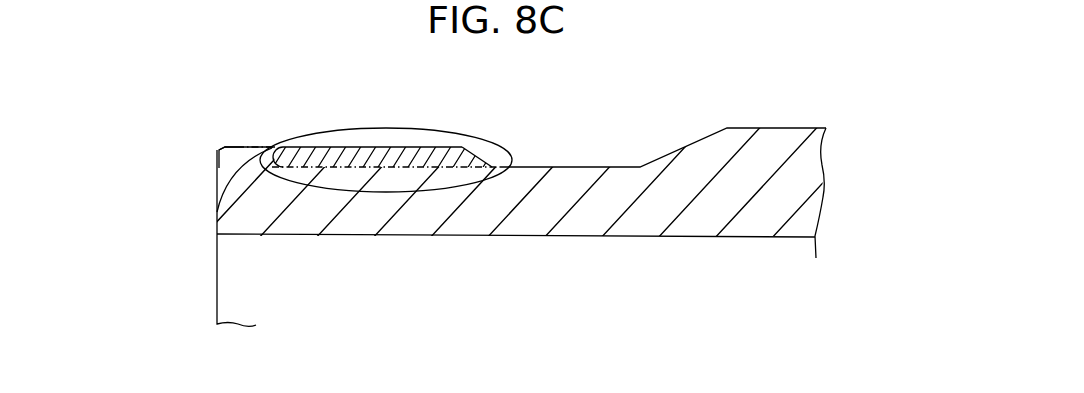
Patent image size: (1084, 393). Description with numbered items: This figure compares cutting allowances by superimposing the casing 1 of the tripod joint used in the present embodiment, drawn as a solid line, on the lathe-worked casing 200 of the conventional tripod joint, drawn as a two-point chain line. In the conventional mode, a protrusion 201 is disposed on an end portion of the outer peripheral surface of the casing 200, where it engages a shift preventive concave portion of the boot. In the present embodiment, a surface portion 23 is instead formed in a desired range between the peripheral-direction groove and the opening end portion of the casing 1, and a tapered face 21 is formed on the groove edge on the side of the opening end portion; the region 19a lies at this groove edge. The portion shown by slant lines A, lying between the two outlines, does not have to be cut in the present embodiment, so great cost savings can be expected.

The casing 1 is at (779, 126).
The protrusion 201 is at (215, 167).
The tapered face 21 is at (240, 150).
The surface portion (protrusion) 23 is at (390, 147).
The portion shown by slant lines A is at (342, 157).
The curved end surface 19a is at (478, 140).
The casing 200 is at (212, 197).